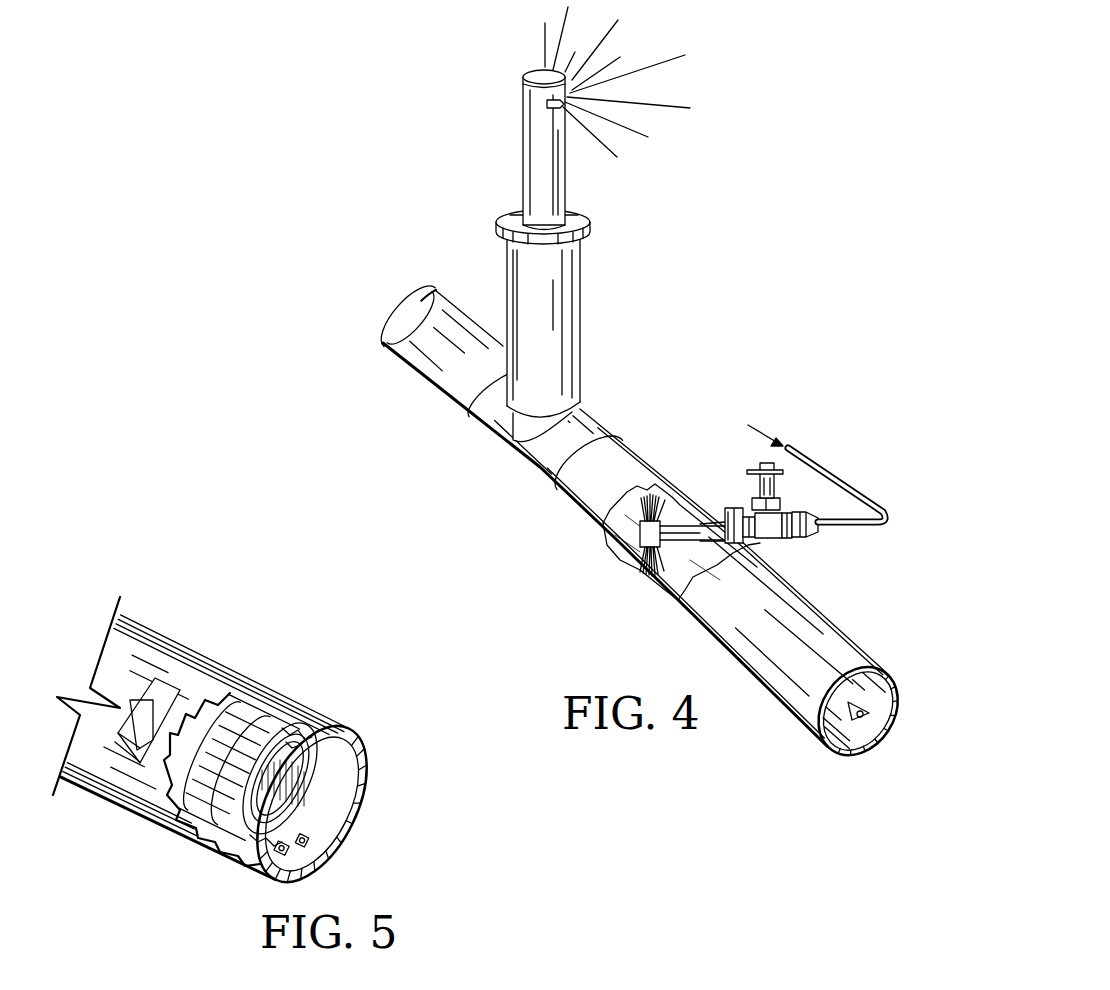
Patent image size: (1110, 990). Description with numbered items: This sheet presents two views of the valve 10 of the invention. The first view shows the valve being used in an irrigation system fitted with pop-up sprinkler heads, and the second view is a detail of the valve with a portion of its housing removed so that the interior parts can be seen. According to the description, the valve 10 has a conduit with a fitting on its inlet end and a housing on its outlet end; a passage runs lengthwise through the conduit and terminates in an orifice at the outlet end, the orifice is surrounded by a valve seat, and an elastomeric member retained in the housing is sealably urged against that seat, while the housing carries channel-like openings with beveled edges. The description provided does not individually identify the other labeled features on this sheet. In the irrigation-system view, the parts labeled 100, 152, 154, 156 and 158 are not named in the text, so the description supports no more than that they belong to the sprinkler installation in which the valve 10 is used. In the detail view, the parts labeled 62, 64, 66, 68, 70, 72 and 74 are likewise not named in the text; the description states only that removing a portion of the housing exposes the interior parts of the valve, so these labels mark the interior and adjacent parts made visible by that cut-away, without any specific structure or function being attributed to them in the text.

In FIG. 5, the valve 10 is at (272, 620).
In FIG. 5, the pipe 62 is at (137, 668).
In FIG. 5, the brush insert 64 is at (233, 797).
In FIG. 5, the pipe end 66 is at (222, 660).
In FIG. 5, the retaining clip 68 is at (310, 722).
In FIG. 5, the tabs 70 is at (340, 846).
In FIG. 5, the ring 72 is at (340, 798).
In FIG. 5, the bracket 74 is at (137, 668).
In FIG. 4, the valve assembly 100 is at (728, 502).
In FIG. 4, the pipe 152 is at (800, 612).
In FIG. 4, the plunger rod 154 is at (535, 193).
In FIG. 4, the nozzle 156 is at (868, 716).
In FIG. 4, the brush 158 is at (620, 548).